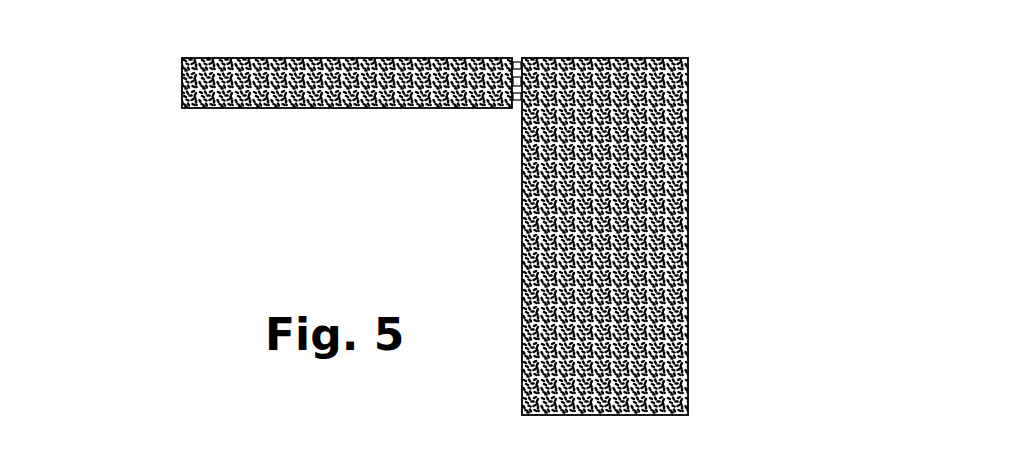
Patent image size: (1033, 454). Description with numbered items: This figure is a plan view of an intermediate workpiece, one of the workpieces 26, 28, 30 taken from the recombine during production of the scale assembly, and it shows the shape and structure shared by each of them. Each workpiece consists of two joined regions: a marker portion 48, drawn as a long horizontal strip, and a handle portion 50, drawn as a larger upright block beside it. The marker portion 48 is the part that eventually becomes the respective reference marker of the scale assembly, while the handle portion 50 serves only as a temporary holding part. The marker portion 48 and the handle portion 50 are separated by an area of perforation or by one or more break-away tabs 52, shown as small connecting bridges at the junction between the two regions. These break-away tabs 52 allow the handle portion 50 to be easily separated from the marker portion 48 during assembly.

The workpiece 26 is at (158, 60).
The workpiece 28 is at (274, 61).
The workpiece 30 is at (275, 61).
The marker portion 48 is at (407, 58).
The handle portion 50 is at (688, 182).
The break-away tabs 52 is at (516, 105).